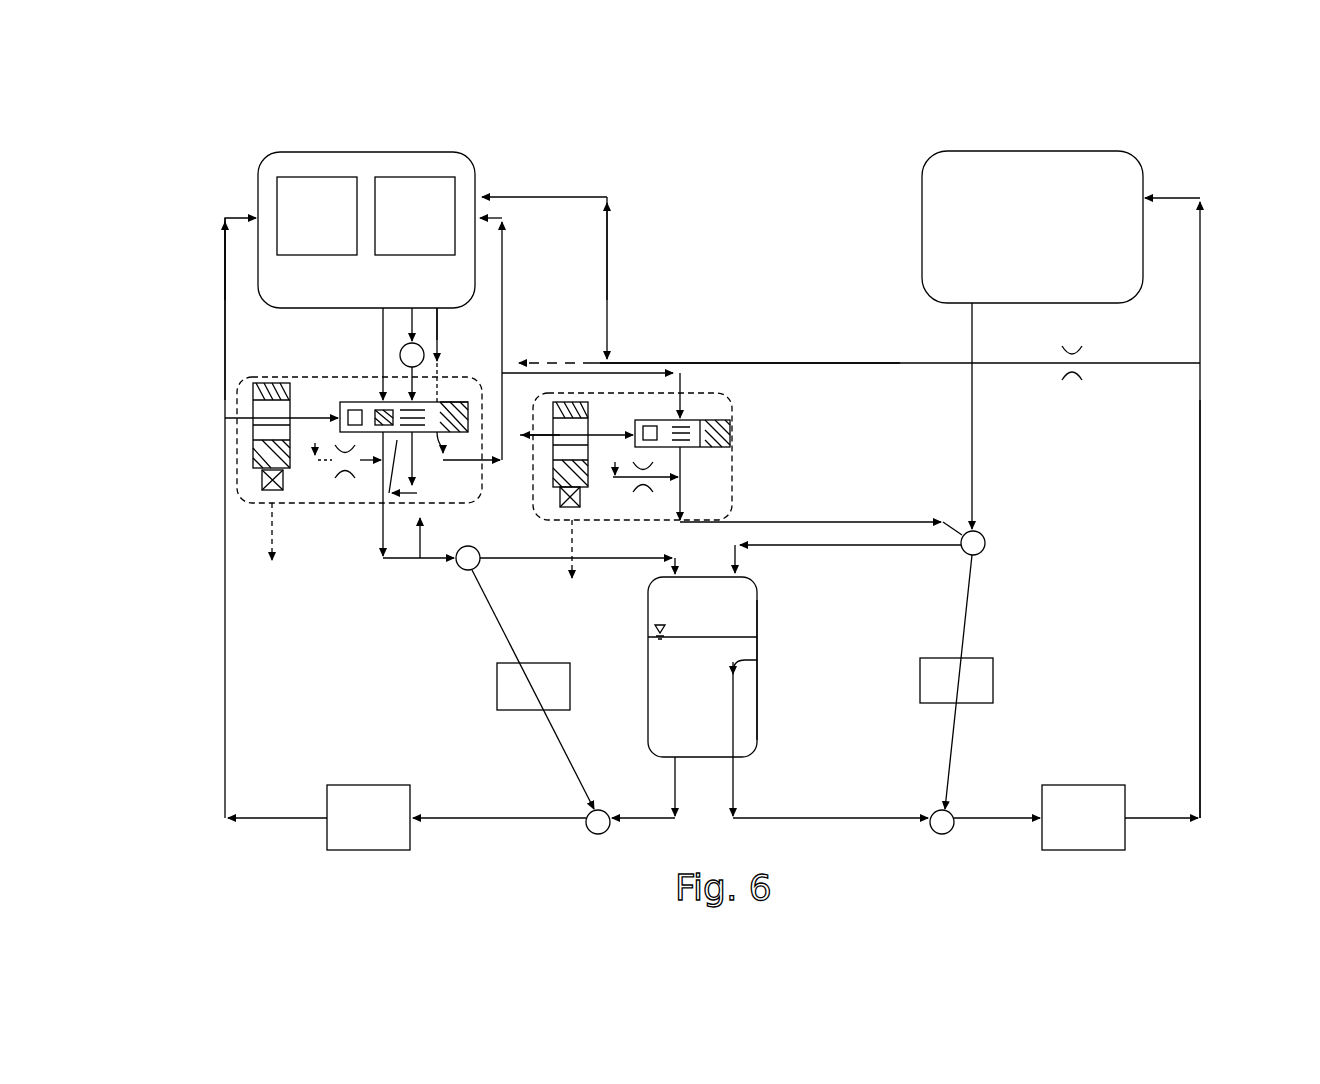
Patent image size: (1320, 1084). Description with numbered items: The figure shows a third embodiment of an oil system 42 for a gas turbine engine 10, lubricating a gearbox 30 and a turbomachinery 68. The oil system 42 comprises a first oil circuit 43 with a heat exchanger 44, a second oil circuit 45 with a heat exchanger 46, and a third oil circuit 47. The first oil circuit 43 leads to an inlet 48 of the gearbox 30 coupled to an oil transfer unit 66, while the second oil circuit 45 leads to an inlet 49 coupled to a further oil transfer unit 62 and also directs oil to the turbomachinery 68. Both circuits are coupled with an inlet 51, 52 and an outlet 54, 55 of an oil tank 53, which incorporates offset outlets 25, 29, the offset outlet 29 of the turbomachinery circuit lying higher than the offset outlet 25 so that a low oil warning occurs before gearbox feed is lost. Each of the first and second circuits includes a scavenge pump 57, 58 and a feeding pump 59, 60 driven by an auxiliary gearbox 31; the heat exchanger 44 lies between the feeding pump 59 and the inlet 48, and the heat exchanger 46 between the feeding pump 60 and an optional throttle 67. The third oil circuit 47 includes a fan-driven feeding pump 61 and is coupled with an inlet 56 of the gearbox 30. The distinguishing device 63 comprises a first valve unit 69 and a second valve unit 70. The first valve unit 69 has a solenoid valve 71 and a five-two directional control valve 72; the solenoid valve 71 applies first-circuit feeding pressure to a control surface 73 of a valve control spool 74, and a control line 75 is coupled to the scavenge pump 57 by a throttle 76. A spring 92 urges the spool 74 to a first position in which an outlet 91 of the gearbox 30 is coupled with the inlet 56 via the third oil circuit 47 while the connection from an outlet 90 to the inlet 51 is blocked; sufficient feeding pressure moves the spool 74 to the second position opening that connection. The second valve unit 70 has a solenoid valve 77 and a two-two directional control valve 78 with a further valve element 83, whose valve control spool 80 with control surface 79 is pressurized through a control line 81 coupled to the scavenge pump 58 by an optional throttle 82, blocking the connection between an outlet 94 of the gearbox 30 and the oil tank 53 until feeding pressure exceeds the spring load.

The gas turbine engine 10 is at (1232, 180).
The offset outlet 25 is at (668, 740).
The offset outlet 29 is at (770, 662).
The gearbox 30 is at (482, 165).
The auxiliary gearbox 31 is at (508, 702).
The oil system 42 is at (753, 200).
The first oil circuit 43 is at (233, 655).
The heat exchanger 44 is at (362, 793).
The second oil circuit 45 is at (1192, 613).
The heat exchanger 46 is at (1082, 795).
The third oil circuit 47 is at (508, 303).
The inlet 48 is at (246, 208).
The inlet 49 is at (487, 195).
The inlet 51 is at (656, 580).
The inlet 52 is at (750, 568).
The oil tank 53 is at (770, 697).
The outlet 54 is at (664, 765).
The outlet 55 is at (742, 762).
The inlet 56 is at (488, 230).
The scavenge pump 57 is at (487, 522).
The scavenge pump 58 is at (985, 538).
The feeding pump 59 is at (590, 833).
The feeding pump 60 is at (932, 832).
The feeding pump 61 is at (444, 365).
The oil transfer unit 62 is at (410, 180).
The device 63 is at (420, 522).
The oil transfer unit 66 is at (318, 180).
The throttle 67 is at (1072, 382).
The turbomachinery 68 is at (1035, 170).
The first valve unit 69 is at (275, 565).
The second valve unit 70 is at (748, 483).
The solenoid valve 71 is at (240, 392).
The 5/2 directional control valve 72 is at (350, 495).
The control surface 73 is at (330, 412).
The valve control spool 74 is at (428, 466).
The control line 75 is at (295, 400).
The throttle 76 is at (300, 512).
The solenoid valve 77 is at (478, 500).
The 2/2 directional control valve 78 is at (720, 412).
The control surface 79 is at (636, 432).
The valve control spool 80 is at (703, 415).
The control line 81 is at (625, 490).
The throttle 82 is at (576, 547).
The valve port 83 is at (730, 432).
The outlet 90 is at (380, 312).
The outlet 91 is at (408, 318).
The spring 92 is at (470, 402).
The outlet 94 is at (437, 315).